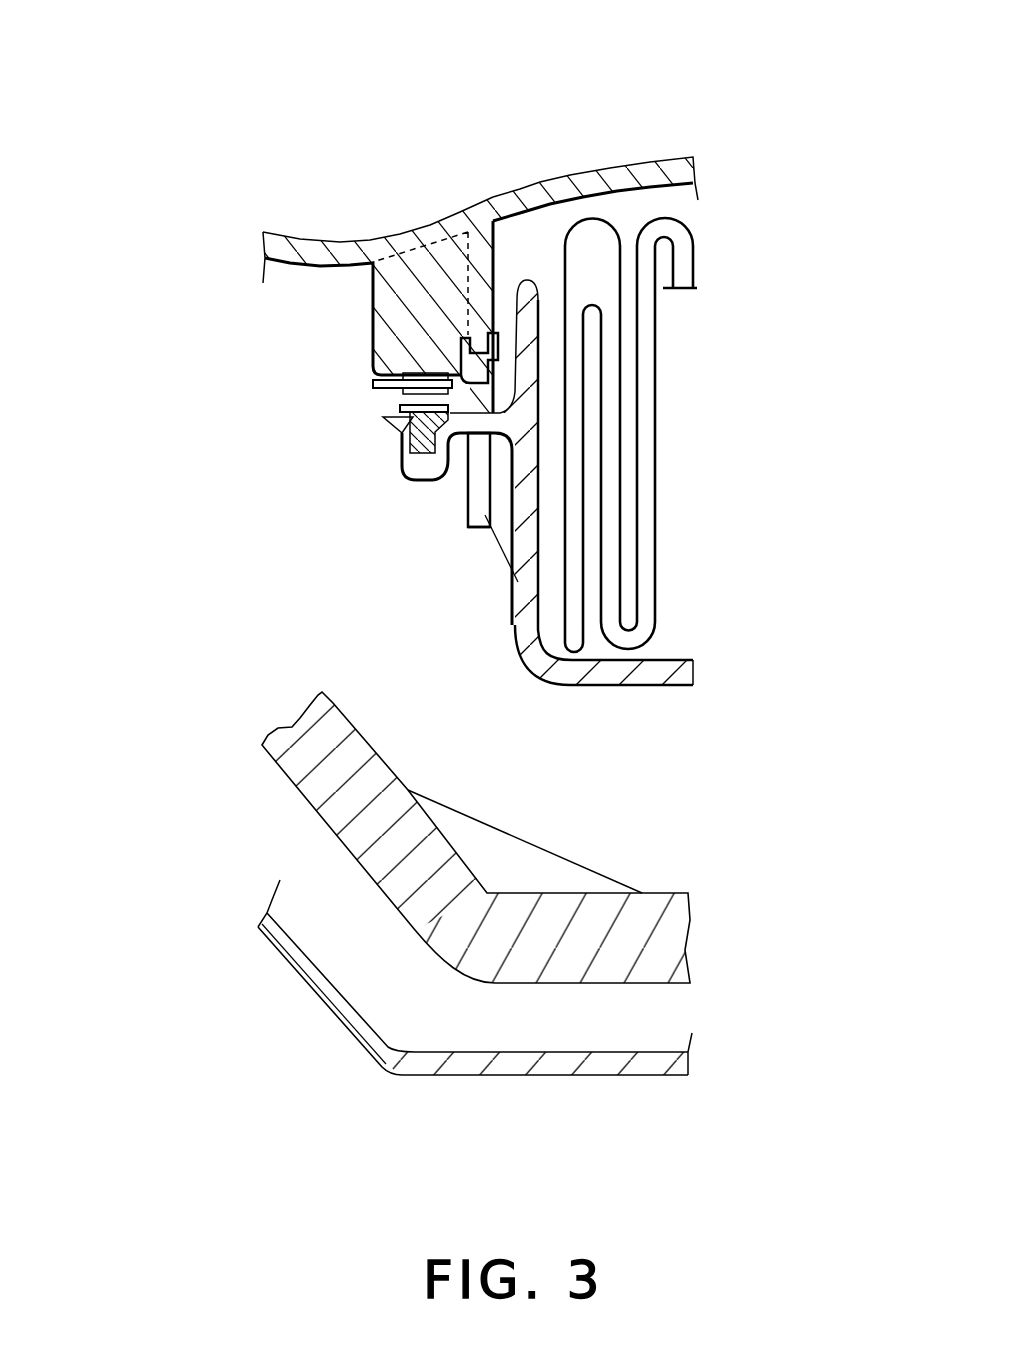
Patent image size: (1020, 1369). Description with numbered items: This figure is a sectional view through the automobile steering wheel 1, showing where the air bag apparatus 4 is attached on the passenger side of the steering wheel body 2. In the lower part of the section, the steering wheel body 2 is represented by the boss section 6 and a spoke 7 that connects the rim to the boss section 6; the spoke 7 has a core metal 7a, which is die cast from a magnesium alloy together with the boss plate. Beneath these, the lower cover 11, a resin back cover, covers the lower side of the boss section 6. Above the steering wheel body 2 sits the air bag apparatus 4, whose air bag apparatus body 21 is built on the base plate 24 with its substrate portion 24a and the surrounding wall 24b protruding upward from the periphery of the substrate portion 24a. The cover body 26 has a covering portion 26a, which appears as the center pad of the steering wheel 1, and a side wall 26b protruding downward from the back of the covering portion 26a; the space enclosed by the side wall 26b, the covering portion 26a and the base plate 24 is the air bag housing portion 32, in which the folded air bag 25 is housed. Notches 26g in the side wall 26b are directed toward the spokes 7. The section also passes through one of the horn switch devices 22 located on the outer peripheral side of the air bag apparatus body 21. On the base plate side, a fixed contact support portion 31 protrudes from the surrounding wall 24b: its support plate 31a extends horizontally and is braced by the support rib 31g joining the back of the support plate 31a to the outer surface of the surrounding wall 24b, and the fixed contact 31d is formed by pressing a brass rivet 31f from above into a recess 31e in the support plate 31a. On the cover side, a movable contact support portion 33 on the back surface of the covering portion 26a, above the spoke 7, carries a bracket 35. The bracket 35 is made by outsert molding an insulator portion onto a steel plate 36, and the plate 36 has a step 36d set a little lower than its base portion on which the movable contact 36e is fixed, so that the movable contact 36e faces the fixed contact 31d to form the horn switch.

The steering wheel 1 is at (766, 82).
The steering wheel body 2 is at (526, 1039).
The air bag apparatus 4 is at (738, 160).
The boss section 6 is at (661, 140).
The spoke 7 is at (446, 303).
The core metal 7a is at (300, 787).
The lower cover 11 is at (572, 1062).
The air bag apparatus body 21 is at (675, 688).
The horn switch device 22 is at (438, 483).
The base plate 24 is at (542, 535).
The substrate portion 24a is at (588, 688).
The surrounding wall 24b is at (515, 600).
The air bag 25 is at (645, 445).
The cover body 26 is at (601, 165).
The covering portion 26a is at (547, 184).
The side wall 26b is at (488, 518).
The notch 26g is at (512, 548).
The fixed contact support portion 31 is at (387, 416).
The support plate 31a is at (468, 490).
The fixed contact 31d is at (403, 437).
The recess 31e is at (415, 481).
The rivet 31f is at (400, 410).
The support rib 31g is at (497, 536).
The air bag housing portion 32 is at (522, 223).
The movable contact support portion 33 is at (402, 277).
The bracket 35 is at (365, 266).
The plate 36 is at (472, 432).
The step 36d is at (373, 387).
The movable contact 36e is at (373, 348).